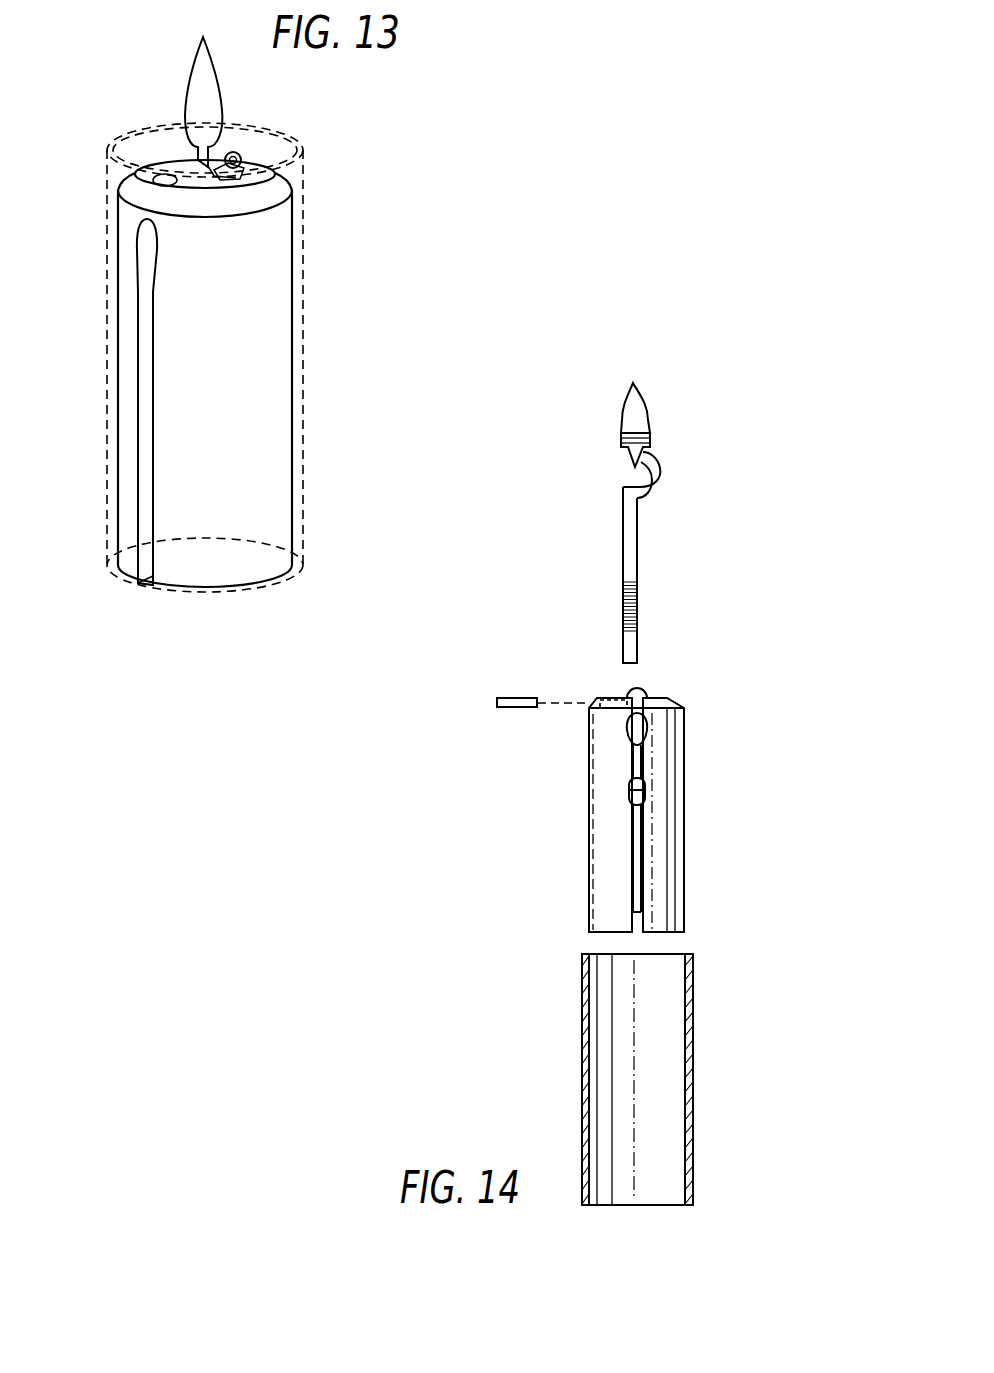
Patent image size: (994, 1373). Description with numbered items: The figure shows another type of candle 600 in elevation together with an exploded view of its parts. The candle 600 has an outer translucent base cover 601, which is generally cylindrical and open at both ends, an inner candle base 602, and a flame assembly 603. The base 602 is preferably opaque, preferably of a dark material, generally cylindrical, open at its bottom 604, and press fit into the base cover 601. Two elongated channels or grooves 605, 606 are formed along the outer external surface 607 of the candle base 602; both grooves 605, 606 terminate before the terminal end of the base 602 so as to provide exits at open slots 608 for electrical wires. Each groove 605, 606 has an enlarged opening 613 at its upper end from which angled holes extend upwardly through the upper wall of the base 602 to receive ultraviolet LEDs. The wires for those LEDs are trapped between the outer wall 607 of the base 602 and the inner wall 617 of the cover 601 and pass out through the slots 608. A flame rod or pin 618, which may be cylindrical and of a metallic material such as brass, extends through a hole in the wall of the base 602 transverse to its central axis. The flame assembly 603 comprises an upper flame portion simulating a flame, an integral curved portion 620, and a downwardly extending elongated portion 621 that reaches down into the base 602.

In FIG. 13, the candle 600 is at (340, 312).
In FIG. 13, the elongated channel or groove 605 is at (152, 394).
In FIG. 14, the elongated channel or groove 605 is at (634, 832).
In FIG. 13, the elongated channel or groove 606 is at (255, 166).
In FIG. 14, the outer translucent base cover 601 is at (714, 1079).
In FIG. 14, the inner candle base 602 is at (547, 843).
In FIG. 14, the flame assembly 603 is at (713, 487).
In FIG. 14, the bottom 604 is at (666, 933).
In FIG. 14, the outer external surface 607 is at (684, 799).
In FIG. 14, the open slot 608 is at (635, 906).
In FIG. 14, the enlarged opening 613 is at (646, 729).
In FIG. 14, the inner wall 617 is at (684, 1176).
In FIG. 14, the flame rod or pin 618 is at (520, 698).
In FIG. 14, the integral curved portion 620 is at (662, 472).
In FIG. 14, the downwardly extending elongated portion 621 is at (638, 560).